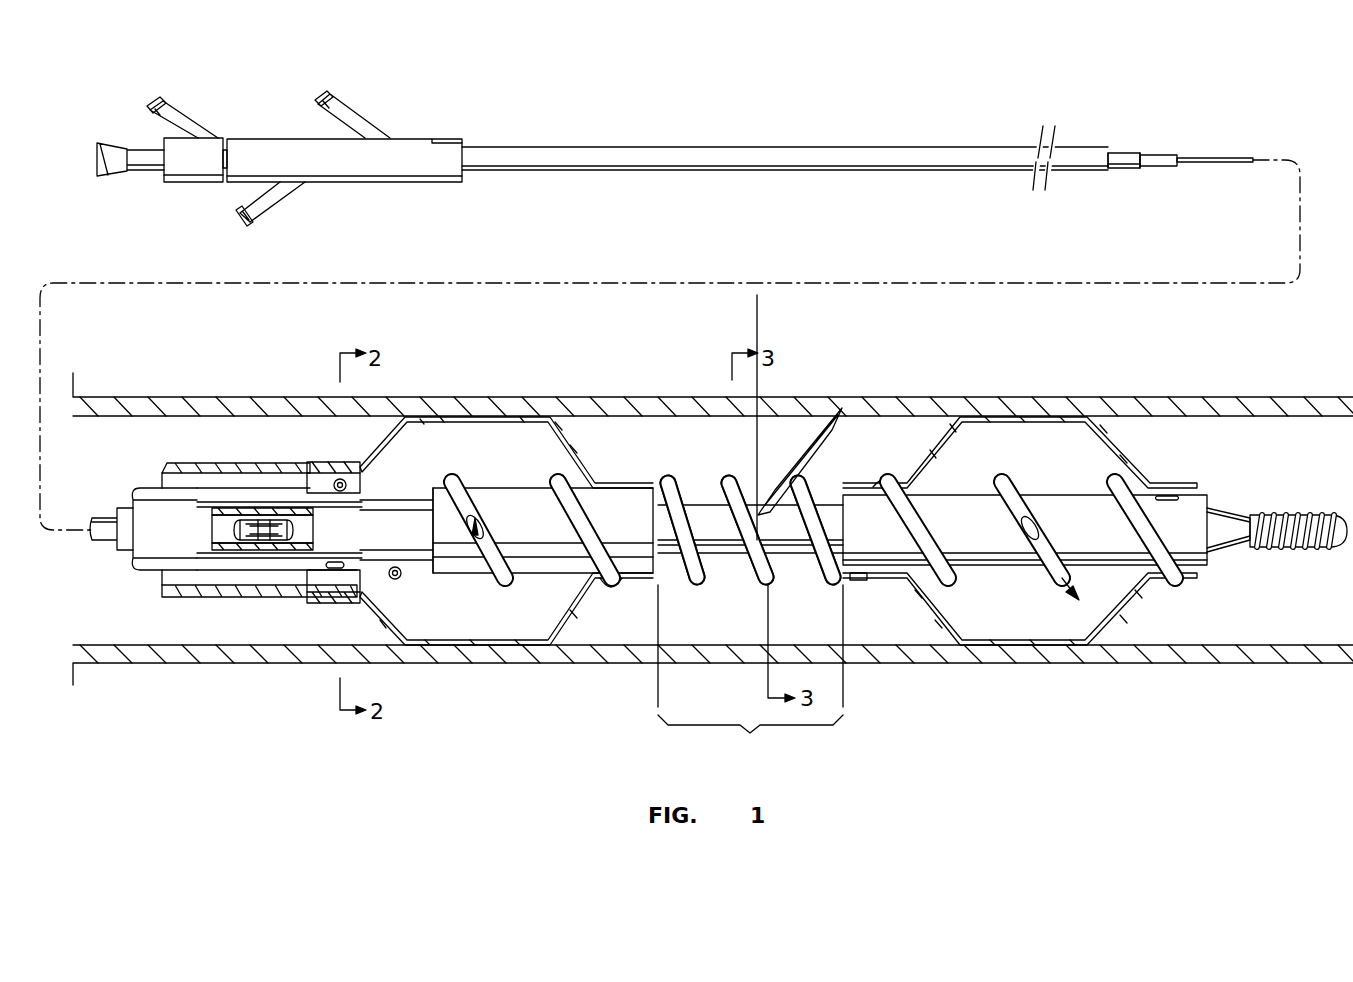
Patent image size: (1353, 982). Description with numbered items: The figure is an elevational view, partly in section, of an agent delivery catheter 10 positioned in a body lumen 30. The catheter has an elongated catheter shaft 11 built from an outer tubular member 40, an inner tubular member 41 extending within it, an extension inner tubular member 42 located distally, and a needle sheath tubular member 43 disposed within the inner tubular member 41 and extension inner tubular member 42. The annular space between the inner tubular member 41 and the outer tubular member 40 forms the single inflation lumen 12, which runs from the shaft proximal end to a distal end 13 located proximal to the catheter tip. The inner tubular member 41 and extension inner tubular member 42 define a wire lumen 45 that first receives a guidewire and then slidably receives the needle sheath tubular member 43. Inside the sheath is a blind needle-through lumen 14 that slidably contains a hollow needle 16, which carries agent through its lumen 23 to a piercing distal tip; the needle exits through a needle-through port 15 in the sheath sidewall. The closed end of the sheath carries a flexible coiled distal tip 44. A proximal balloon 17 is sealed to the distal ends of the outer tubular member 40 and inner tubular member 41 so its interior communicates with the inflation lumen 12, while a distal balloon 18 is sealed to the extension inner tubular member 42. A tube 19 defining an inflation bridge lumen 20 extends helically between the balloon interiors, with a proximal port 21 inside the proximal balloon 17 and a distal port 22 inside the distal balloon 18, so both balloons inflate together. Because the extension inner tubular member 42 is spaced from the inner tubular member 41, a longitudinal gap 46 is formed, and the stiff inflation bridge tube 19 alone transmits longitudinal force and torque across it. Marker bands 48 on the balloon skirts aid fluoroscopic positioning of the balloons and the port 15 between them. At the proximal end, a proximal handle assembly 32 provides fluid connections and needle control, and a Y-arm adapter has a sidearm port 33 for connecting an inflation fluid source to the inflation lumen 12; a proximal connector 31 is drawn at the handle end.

The agent delivery catheter 10 is at (980, 100).
The elongated catheter shaft 11 is at (850, 147).
The inflation lumen 12 is at (175, 472).
The distal end of the inflation lumen 13 is at (370, 580).
The needle-through lumen 14 is at (248, 522).
The needle-through port 15 is at (780, 500).
The hollow needle 16 is at (1212, 158).
The proximal balloon 17 is at (585, 465).
The distal balloon 18 is at (1135, 462).
The inflation bridge tube 19 is at (935, 522).
The inflation bridge lumen 20 is at (350, 485).
The proximal port 21 is at (490, 520).
The distal port 22 is at (1033, 520).
The lumen of the hollow needle 23 is at (268, 522).
The body lumen 30 is at (1323, 620).
The proximal connector 31 is at (108, 143).
The proximal handle assembly 32 is at (344, 181).
The sidearm port 33 is at (322, 96).
The outer tubular member 40 is at (1090, 147).
The inner tubular member 41 is at (1125, 168).
The extension inner tubular member 42 is at (1205, 565).
The needle sheath tubular member 43 is at (1160, 155).
The flexible coiled distal tip 44 is at (1285, 515).
The wire lumen 45 is at (240, 553).
The longitudinal gap 46 is at (750, 675).
The marker bands 48 is at (625, 590).